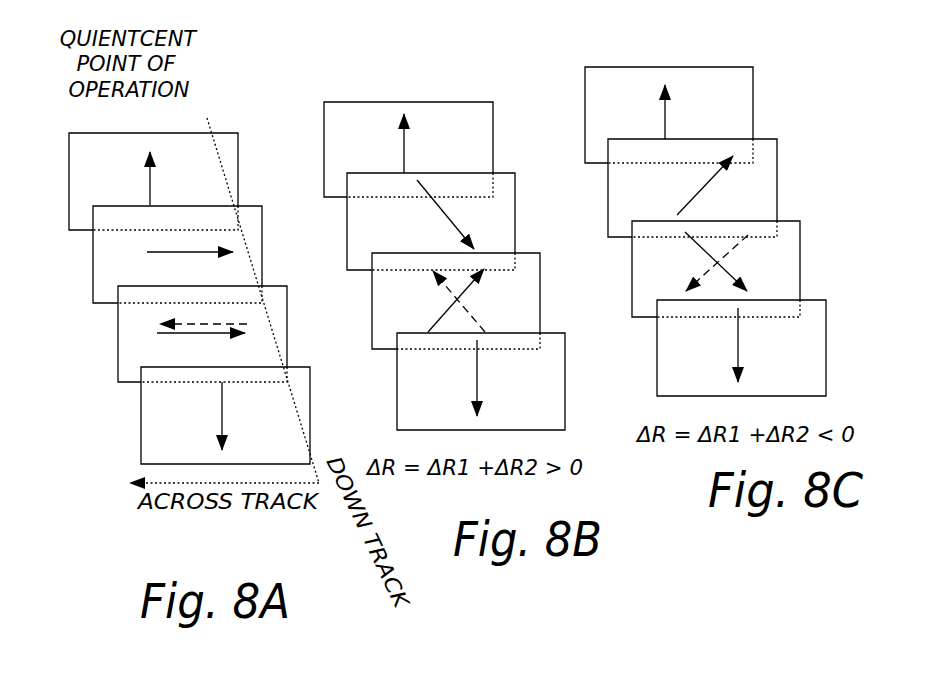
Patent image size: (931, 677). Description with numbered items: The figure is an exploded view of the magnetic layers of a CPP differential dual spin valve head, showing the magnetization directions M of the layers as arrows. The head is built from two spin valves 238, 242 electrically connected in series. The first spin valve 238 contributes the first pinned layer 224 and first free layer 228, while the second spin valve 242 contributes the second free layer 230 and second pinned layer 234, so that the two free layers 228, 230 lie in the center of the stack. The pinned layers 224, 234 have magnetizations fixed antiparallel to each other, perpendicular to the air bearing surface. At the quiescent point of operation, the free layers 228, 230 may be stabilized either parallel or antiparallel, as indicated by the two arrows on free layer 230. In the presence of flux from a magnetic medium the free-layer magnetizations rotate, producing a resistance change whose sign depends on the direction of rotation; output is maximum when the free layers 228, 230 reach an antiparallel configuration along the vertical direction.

In FIG. 8A, the first pinned layer 224 is at (235, 182).
In FIG. 8B, the first pinned layer 224 is at (492, 148).
In FIG. 8C, the first pinned layer 224 is at (747, 115).
In FIG. 8A, the first free layer 228 is at (300, 249).
In FIG. 8B, the first free layer 228 is at (512, 225).
In FIG. 8C, the first free layer 228 is at (773, 198).
In FIG. 8A, the second free layer 230 is at (288, 350).
In FIG. 8B, the second free layer 230 is at (567, 288).
In FIG. 8C, the second free layer 230 is at (798, 267).
In FIG. 8A, the second pinned layer 234 is at (310, 438).
In FIG. 8B, the second pinned layer 234 is at (562, 392).
In FIG. 8C, the second pinned layer 234 is at (820, 355).
In FIG. 8A, the first spin valve 238 is at (65, 133).
In FIG. 8A, the second spin valve 242 is at (110, 302).